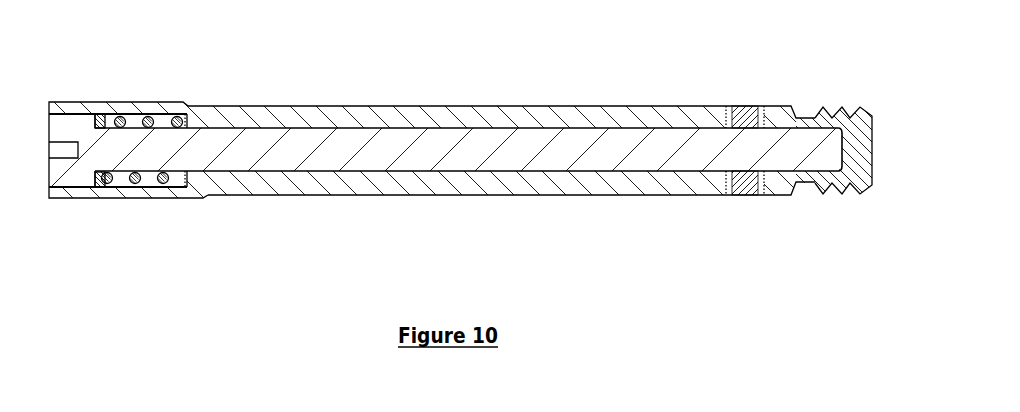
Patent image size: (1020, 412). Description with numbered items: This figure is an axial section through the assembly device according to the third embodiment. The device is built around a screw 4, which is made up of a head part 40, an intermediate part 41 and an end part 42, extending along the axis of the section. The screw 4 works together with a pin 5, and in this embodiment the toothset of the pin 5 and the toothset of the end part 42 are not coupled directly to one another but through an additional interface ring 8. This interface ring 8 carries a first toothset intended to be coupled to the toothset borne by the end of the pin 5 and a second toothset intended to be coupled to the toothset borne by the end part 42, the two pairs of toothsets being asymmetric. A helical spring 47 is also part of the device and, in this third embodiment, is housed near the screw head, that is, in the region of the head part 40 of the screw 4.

The screw 4 is at (292, 130).
The pin 5 is at (465, 120).
The interface ring 8 is at (748, 120).
The head part 40 is at (78, 122).
The intermediate part 41 is at (565, 142).
The end part 42 is at (855, 178).
The helical spring 47 is at (148, 122).